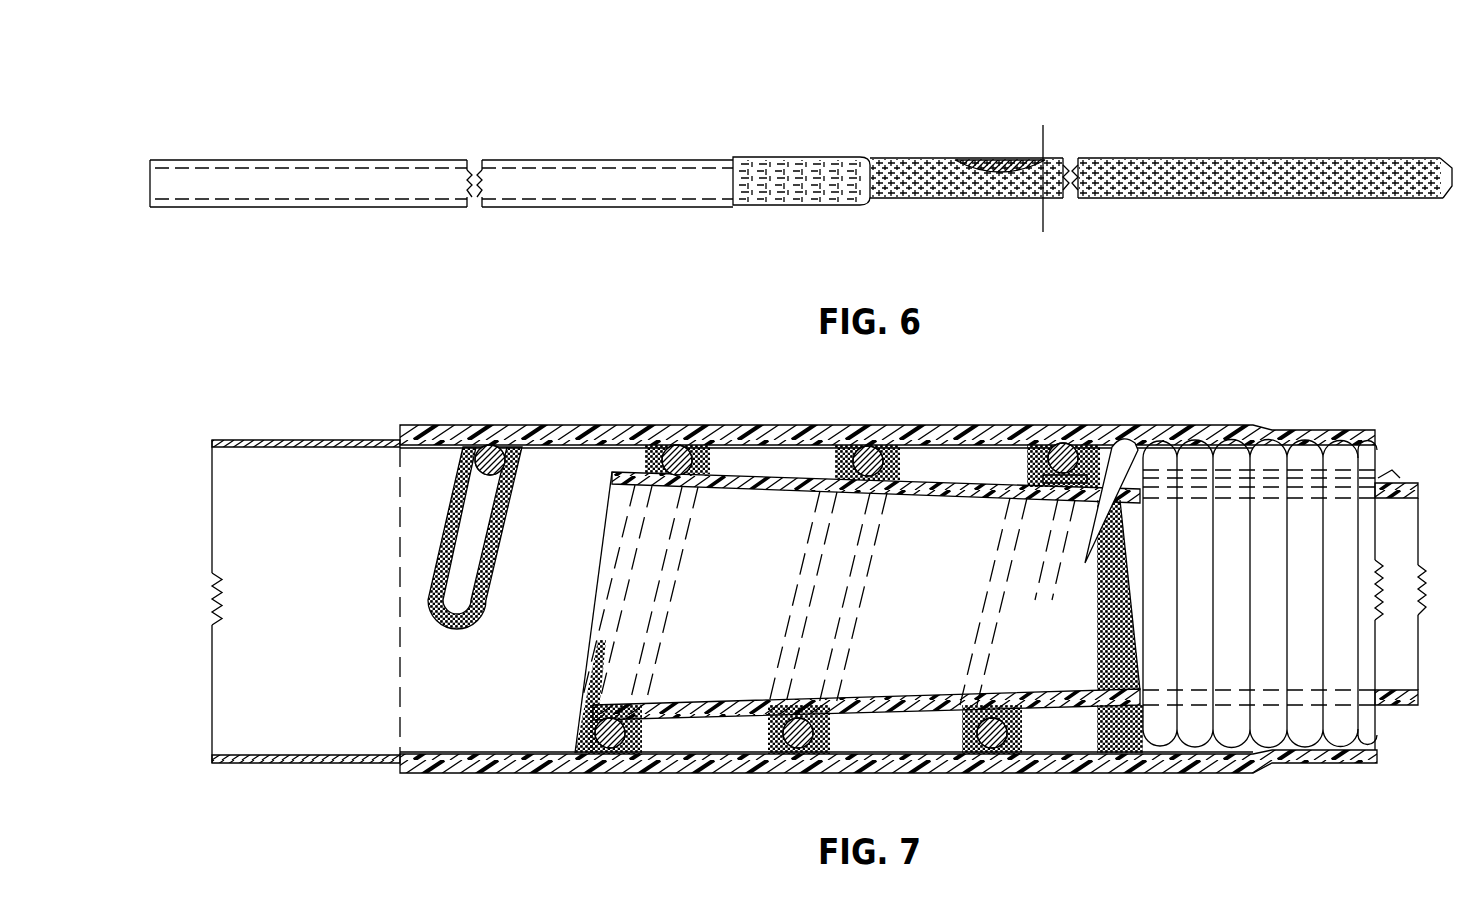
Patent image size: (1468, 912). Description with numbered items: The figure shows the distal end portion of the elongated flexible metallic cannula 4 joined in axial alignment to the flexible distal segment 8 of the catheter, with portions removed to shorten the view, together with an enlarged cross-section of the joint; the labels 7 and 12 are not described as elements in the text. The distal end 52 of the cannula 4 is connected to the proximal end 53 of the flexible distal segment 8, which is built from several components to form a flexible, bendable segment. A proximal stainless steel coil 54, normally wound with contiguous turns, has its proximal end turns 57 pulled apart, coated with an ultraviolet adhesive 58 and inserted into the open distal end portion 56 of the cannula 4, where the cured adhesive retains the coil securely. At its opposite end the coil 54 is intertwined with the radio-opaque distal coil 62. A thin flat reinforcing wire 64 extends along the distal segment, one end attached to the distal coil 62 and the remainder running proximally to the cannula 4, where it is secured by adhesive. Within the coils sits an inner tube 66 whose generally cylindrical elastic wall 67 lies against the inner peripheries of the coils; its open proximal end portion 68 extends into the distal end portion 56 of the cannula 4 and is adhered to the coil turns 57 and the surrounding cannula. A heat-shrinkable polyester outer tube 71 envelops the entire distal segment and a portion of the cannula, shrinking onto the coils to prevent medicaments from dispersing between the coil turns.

In FIG. 6, the flexible cannula 4 is at (870, 150).
In FIG. 7, the flexible cannula 4 is at (287, 437).
In FIG. 6, the proximal section 7 is at (150, 183).
In FIG. 6, the flexible distal segment 8 is at (1450, 63).
In FIG. 6, the section line 12- 12 is at (1043, 125).
In FIG. 7, the distal end of the cannula 52 is at (1222, 440).
In FIG. 6, the proximal end of the flexible distal segment 53 is at (886, 158).
In FIG. 7, the proximal end of the flexible distal segment 53 is at (1232, 730).
In FIG. 6, the proximal stainless steel coil 54 is at (870, 118).
In FIG. 7, the proximal stainless steel coil 54 is at (1349, 717).
In FIG. 7, the distal end portion of the cannula 56 is at (973, 427).
In FIG. 6, the proximal end turns of the coil 57 is at (766, 202).
In FIG. 7, the proximal end turns of the coil 57 is at (485, 515).
In FIG. 7, the ultraviolet adhesive 58 is at (490, 582).
In FIG. 6, the distal coil 62 is at (1450, 47).
In FIG. 7, the reinforcing wire 64 is at (1030, 483).
In FIG. 7, the inner tube 66 is at (949, 504).
In FIG. 7, the cylindrical elastic wall 67 is at (764, 500).
In FIG. 7, the open proximal end portion of the inner tube 68 is at (594, 627).
In FIG. 7, the outer tube 71 is at (592, 424).